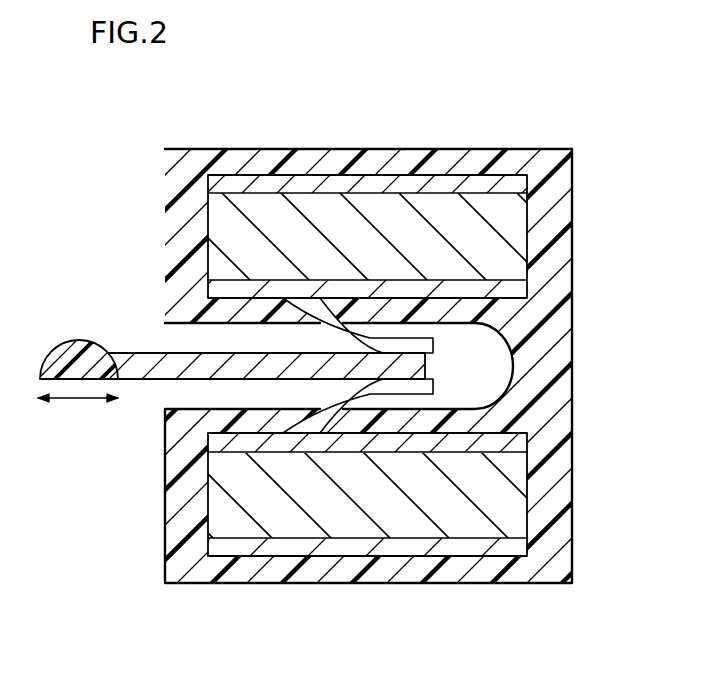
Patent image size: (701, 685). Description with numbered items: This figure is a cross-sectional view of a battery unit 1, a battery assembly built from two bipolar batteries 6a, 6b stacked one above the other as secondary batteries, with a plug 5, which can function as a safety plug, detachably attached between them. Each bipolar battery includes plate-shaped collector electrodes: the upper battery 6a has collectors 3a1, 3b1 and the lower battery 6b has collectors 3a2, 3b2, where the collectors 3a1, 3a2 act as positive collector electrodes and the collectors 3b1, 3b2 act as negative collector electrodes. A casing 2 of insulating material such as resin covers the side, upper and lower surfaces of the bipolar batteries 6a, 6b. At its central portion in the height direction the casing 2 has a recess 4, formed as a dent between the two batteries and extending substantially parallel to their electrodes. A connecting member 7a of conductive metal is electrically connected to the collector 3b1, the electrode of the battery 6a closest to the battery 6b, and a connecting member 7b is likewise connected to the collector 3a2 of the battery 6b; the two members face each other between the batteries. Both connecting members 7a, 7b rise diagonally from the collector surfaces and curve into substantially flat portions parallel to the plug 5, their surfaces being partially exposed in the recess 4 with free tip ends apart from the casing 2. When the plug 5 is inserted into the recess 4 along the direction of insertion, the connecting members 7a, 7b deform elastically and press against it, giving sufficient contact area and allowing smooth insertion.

The battery unit 1 is at (541, 104).
The casing 2 is at (480, 160).
The collector 3a1 is at (508, 185).
The collector 3b1 is at (508, 290).
The collector 3a2 is at (508, 445).
The collector 3b2 is at (508, 550).
The recess 4 is at (196, 408).
The plug 5 is at (142, 362).
The bipolar battery 6a is at (238, 241).
The bipolar battery 6b is at (238, 500).
The connecting member 7a is at (409, 343).
The connecting member 7b is at (409, 387).